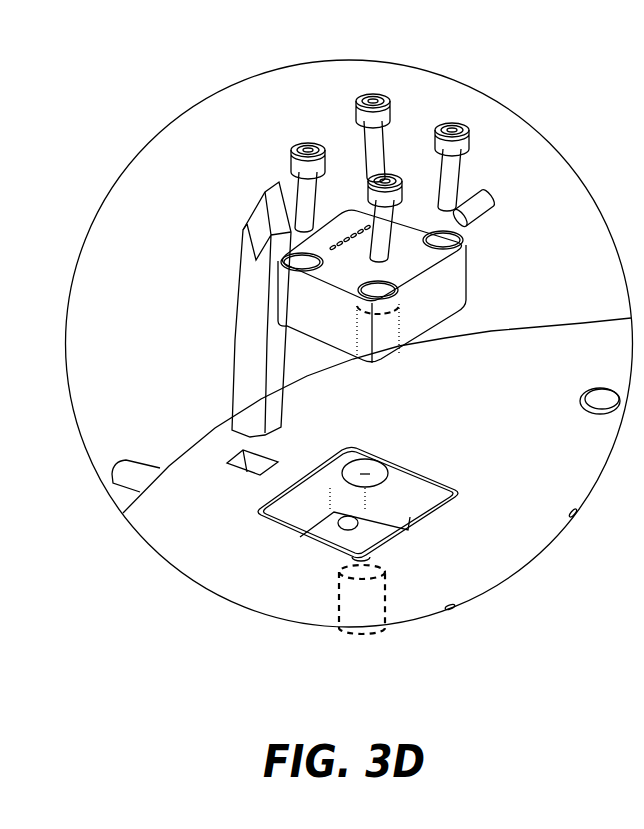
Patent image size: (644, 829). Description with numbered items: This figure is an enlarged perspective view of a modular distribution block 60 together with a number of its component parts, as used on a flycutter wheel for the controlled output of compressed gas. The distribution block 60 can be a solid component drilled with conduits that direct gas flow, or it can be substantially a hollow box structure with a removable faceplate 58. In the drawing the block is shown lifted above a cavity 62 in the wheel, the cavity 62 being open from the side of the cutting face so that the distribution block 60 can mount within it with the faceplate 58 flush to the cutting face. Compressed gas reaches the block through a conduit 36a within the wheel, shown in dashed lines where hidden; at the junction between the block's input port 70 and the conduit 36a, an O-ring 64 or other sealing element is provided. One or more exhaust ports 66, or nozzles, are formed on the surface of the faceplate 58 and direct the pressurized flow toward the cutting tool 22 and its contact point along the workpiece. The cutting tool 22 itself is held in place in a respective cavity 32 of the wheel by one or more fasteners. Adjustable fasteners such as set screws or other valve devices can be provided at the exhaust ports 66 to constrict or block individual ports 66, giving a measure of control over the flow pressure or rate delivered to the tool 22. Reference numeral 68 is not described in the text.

The cutting tool 22 is at (237, 270).
The cavity 32 is at (240, 457).
The conduit 36a is at (337, 596).
The faceplate 58 is at (323, 277).
The distribution block 60 is at (350, 205).
The cavity 62 is at (408, 462).
The O-ring 64 is at (368, 465).
The exhaust port 66 is at (349, 240).
The fasteners 68 is at (377, 94).
The input port 70 is at (400, 312).